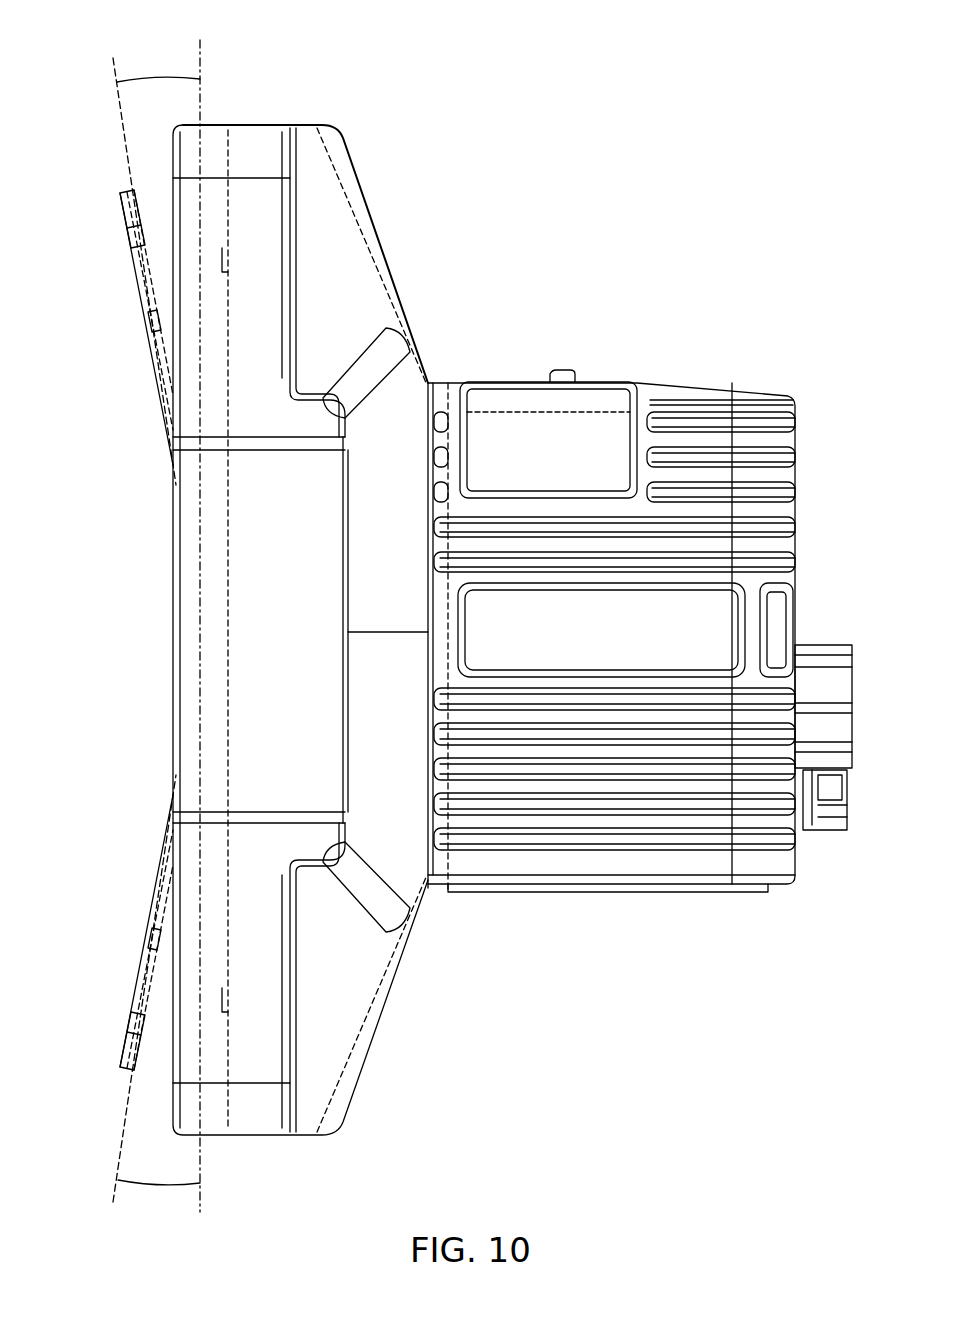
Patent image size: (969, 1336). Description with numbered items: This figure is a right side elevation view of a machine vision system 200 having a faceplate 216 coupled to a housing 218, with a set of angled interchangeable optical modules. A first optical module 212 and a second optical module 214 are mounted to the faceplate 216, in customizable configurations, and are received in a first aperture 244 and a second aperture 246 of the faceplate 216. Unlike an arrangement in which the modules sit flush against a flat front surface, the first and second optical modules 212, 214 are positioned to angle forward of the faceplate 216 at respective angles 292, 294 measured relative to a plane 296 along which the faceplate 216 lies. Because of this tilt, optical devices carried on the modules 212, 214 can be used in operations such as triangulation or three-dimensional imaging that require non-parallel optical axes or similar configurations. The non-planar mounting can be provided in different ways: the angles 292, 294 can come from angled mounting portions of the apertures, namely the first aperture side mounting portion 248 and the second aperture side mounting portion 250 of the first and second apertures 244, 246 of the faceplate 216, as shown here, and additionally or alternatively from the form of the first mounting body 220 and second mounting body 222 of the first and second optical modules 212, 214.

The machine vision system 200 is at (514, 272).
The first optical module 212 is at (110, 327).
The second optical module 214 is at (109, 957).
The faceplate 216 is at (210, 161).
The housing 218 is at (595, 903).
The first mounting body 220 is at (137, 282).
The second mounting body 222 is at (130, 1010).
The first aperture 244 is at (145, 242).
The second aperture 246 is at (122, 1048).
The first aperture side mounting portion 248 is at (162, 313).
The second aperture side mounting portion 250 is at (163, 978).
The angle 292 is at (160, 78).
The angle 294 is at (160, 1185).
The plane 296 is at (202, 60).